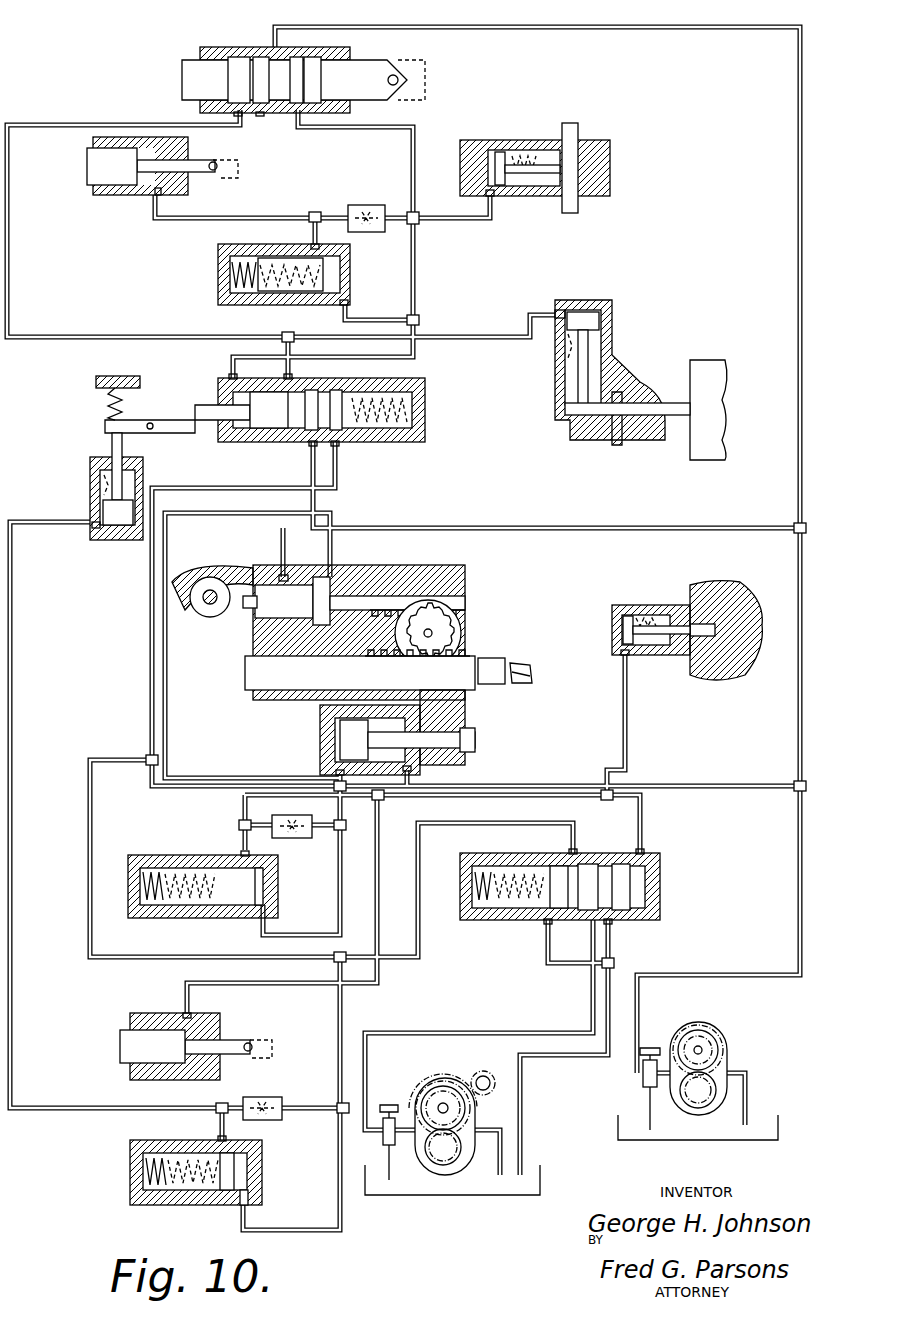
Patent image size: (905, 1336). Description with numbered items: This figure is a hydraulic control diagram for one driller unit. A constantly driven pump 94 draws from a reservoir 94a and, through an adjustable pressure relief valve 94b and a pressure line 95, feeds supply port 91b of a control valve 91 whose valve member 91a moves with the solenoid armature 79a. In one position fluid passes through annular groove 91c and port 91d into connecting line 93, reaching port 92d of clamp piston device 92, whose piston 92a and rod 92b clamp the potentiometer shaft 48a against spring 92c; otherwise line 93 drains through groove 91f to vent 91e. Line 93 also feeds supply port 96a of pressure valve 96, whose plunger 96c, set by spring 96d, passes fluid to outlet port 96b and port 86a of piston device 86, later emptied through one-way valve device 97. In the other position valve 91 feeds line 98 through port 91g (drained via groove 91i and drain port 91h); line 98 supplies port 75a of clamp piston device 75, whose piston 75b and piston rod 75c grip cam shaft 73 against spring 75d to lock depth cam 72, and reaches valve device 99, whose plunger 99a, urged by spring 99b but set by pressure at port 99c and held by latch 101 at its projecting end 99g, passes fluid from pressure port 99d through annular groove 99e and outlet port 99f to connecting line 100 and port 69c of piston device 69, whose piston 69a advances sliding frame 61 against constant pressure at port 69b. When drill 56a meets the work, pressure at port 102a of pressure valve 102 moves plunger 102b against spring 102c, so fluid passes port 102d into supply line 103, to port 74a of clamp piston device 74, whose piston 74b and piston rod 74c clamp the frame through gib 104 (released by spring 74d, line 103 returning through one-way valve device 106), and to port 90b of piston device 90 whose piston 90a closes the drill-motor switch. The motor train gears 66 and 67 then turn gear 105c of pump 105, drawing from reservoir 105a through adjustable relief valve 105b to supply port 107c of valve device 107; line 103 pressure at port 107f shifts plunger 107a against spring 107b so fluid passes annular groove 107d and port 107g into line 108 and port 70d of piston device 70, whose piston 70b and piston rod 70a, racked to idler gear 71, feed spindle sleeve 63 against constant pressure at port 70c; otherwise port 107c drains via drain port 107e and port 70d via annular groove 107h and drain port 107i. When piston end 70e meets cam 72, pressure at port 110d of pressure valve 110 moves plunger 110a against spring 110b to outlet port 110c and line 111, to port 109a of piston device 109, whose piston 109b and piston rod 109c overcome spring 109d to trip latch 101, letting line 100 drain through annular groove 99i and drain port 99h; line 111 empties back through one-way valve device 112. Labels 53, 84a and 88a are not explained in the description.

The potentiometer shaft 48a is at (575, 125).
The block 53 is at (552, 179).
The drill 56a is at (516, 650).
The sliding frame 61 is at (468, 714).
The non-rotatable sleeve 63 is at (472, 658).
The gear 66 is at (488, 1072).
The gear 67 is at (726, 627).
The piston device 69 is at (371, 745).
The piston 69a is at (345, 740).
The port 69b is at (412, 770).
The port 69c is at (336, 775).
The piston device 70 is at (353, 618).
The piston rod 70a is at (466, 600).
The piston 70b is at (390, 598).
The port 70c is at (286, 575).
The port 70d is at (322, 590).
The piston end 70e is at (245, 605).
The idler gear 71 is at (452, 628).
The depth cam 72 is at (200, 612).
The shaft 73 is at (212, 588).
The clamp piston device 74 is at (648, 615).
The port 74a is at (623, 655).
The piston 74b is at (628, 616).
The piston rod 74c is at (672, 655).
The spring 74d is at (648, 620).
The clamp piston device 75 is at (592, 363).
The port 75a is at (560, 322).
The piston 75b is at (598, 322).
The piston rod 75c is at (578, 380).
The spring 75d is at (572, 355).
The armature 79a is at (420, 68).
The link 84a is at (233, 175).
The piston device 86 is at (172, 179).
The port 86a is at (165, 192).
The link 88a is at (265, 1040).
The piston device 90 is at (194, 1040).
The piston 90a is at (148, 1030).
The port 90b is at (195, 1018).
The control valve 91 is at (310, 78).
The valve member 91a is at (392, 94).
The supply port 91b is at (272, 50).
The annular groove 91c is at (265, 55).
The port 91d is at (298, 113).
The vent 91e is at (315, 113).
The annular groove 91f is at (335, 80).
The port 91g is at (260, 116).
The drain port 91h is at (240, 116).
The annular groove 91i is at (236, 80).
The piston device 92 is at (526, 182).
The piston 92a is at (512, 196).
The rod 92b is at (545, 196).
The spring 92c is at (530, 150).
The port 92d is at (490, 200).
The connecting line 93 is at (411, 160).
The pump 94 is at (688, 1088).
The reservoir 94a is at (658, 1142).
The adjustable pressure relief valve 94b is at (643, 1075).
The pressure line 95 is at (798, 748).
The pressure valve 96 is at (280, 267).
The supply port 96a is at (352, 297).
The outlet port 96b is at (313, 244).
The plunger 96c is at (297, 290).
The spring 96d is at (235, 285).
The one-way valve device 97 is at (368, 205).
The line 98 is at (86, 342).
The valve device 99 is at (291, 409).
The plunger 99a is at (392, 395).
The spring 99b is at (425, 408).
The port 99c is at (233, 374).
The pressure port 99d is at (290, 378).
The annular groove 99e is at (270, 410).
The outlet port 99f is at (310, 447).
The projecting end 99g is at (220, 395).
The drain port 99h is at (335, 447).
The annular groove 99i is at (335, 430).
The connecting line 100 is at (150, 676).
The latch 101 is at (175, 420).
The pressure valve 102 is at (210, 874).
The port 102a is at (265, 905).
The plunger 102b is at (182, 906).
The spring 102c is at (140, 880).
The port 102d is at (243, 852).
The supply line 103 is at (458, 800).
The gib 104 is at (725, 640).
The pump 105 is at (447, 1139).
The reservoir 105a is at (436, 1196).
The adjustable relief valve 105b is at (385, 1140).
The gear 105c is at (448, 1077).
The one-way valve device 106 is at (300, 815).
The valve device 107 is at (582, 895).
The plunger 107a is at (645, 852).
The spring 107b is at (478, 884).
The supply port 107c is at (547, 925).
The annular groove 107d is at (622, 910).
The drain port 107e is at (610, 925).
The port 107f is at (660, 866).
The port 107g is at (574, 850).
The annular groove 107h is at (552, 908).
The drain port 107i is at (576, 912).
The line 108 is at (88, 920).
The piston device 109 is at (112, 500).
The port 109a is at (120, 545).
The piston 109b is at (105, 508).
The piston rod 109c is at (112, 440).
The spring 109d is at (135, 482).
The pressure valve 110 is at (179, 1171).
The plunger 110a is at (226, 1190).
The spring 110b is at (146, 1175).
The outlet port 110c is at (220, 1152).
The port 110d is at (250, 1197).
The line 111 is at (10, 984).
The one-way valve device 112 is at (263, 1097).